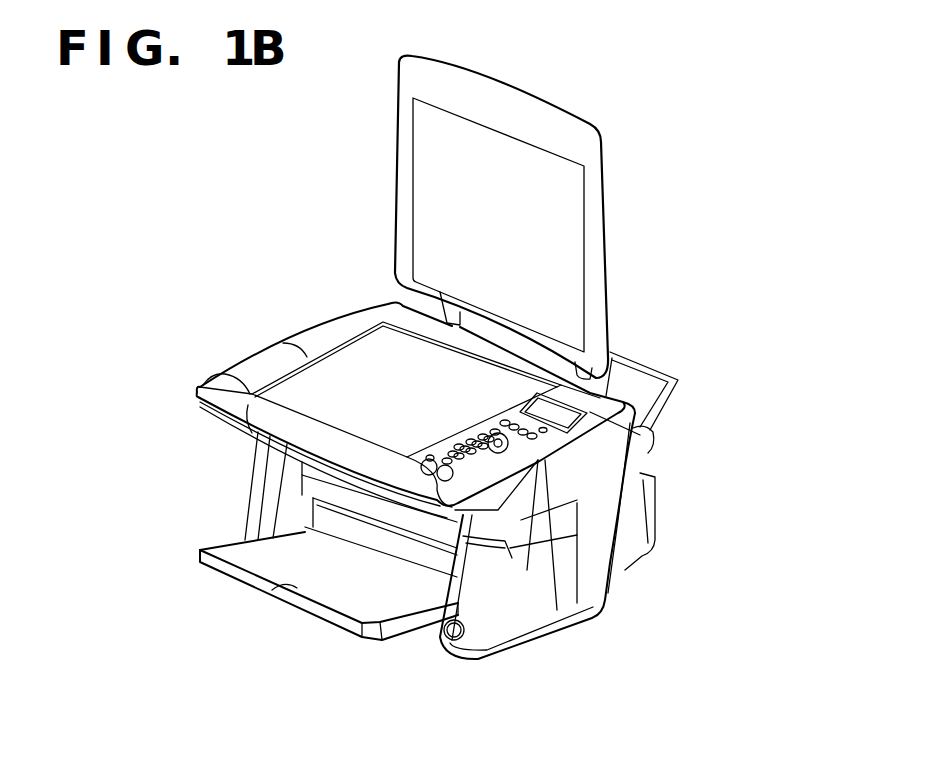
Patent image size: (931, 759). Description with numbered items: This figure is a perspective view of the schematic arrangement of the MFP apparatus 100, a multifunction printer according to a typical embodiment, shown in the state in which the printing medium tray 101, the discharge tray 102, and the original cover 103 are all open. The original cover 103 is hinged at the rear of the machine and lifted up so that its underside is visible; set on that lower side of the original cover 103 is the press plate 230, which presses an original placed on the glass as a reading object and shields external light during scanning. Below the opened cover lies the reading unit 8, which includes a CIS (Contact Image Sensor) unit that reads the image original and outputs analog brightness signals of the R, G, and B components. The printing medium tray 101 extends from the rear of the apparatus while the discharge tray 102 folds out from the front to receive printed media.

The MFP apparatus 100 is at (302, 167).
The printing medium tray 101 is at (640, 378).
The discharge tray 102 is at (328, 595).
The original cover 103 is at (593, 250).
The press plate 230 is at (550, 200).
The reading unit 8 is at (648, 442).